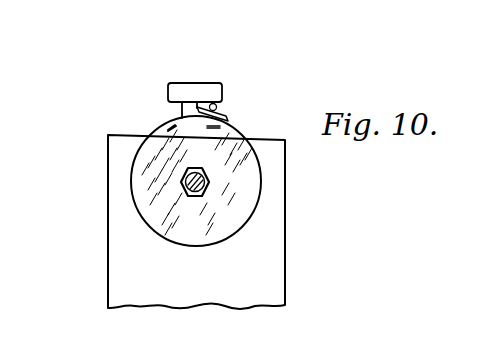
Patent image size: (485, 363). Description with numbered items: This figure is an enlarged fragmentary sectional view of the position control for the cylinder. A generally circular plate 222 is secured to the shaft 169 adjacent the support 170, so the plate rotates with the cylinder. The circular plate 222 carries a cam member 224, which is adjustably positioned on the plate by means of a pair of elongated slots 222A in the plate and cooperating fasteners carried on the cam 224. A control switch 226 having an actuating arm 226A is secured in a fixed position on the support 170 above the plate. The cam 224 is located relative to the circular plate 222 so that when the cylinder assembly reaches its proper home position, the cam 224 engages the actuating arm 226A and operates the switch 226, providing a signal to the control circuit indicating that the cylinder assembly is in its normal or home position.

The shaft 169 is at (208, 188).
The support 170 is at (110, 198).
The circular plate 222 is at (237, 147).
The elongated slots 222A is at (167, 130).
The cam member 224 is at (229, 118).
The control switch 226 is at (190, 88).
The actuating arm 226A is at (217, 105).